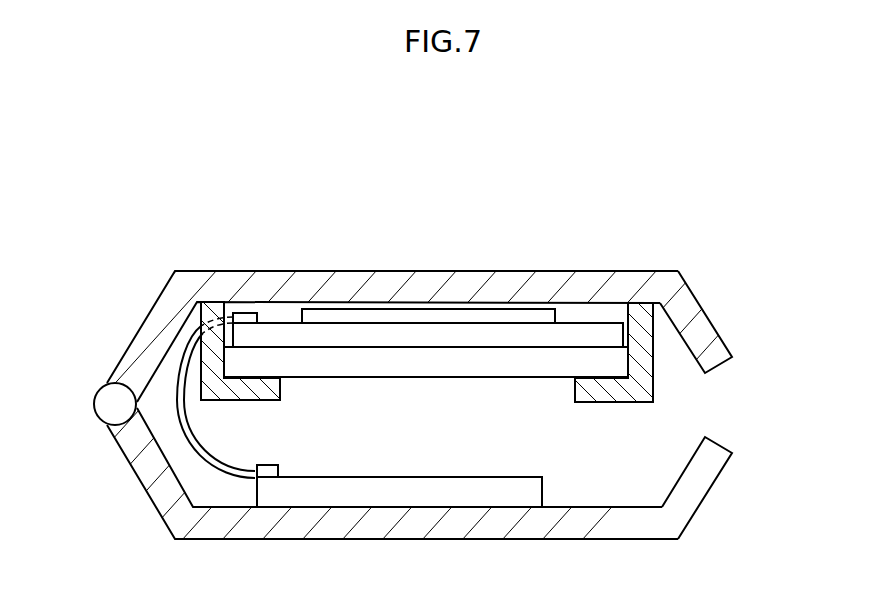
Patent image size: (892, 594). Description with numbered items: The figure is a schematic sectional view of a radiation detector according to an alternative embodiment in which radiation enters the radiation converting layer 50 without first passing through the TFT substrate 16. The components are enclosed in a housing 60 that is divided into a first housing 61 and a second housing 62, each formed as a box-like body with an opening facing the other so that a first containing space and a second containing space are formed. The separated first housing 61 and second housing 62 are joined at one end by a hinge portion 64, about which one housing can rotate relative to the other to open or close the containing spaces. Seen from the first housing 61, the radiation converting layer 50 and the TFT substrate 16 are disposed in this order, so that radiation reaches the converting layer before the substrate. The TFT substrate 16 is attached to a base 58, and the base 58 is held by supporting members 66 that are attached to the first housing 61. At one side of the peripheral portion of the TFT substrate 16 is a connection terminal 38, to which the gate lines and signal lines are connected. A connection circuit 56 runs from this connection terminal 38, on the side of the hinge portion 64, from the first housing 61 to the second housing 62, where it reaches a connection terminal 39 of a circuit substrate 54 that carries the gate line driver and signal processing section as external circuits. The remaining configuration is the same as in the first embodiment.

The TFT substrate 16 is at (498, 347).
The connection terminal 38 is at (240, 319).
The connection terminal 39 is at (272, 465).
The radiation converting layer 50 is at (421, 316).
The circuit substrate 54 is at (445, 477).
The connection circuit 56 is at (218, 453).
The base 58 is at (398, 370).
The housing 60 is at (758, 405).
The first housing 61 is at (716, 348).
The second housing 62 is at (727, 488).
The hinge portion 64 is at (100, 402).
The supporting members 66 is at (272, 388).